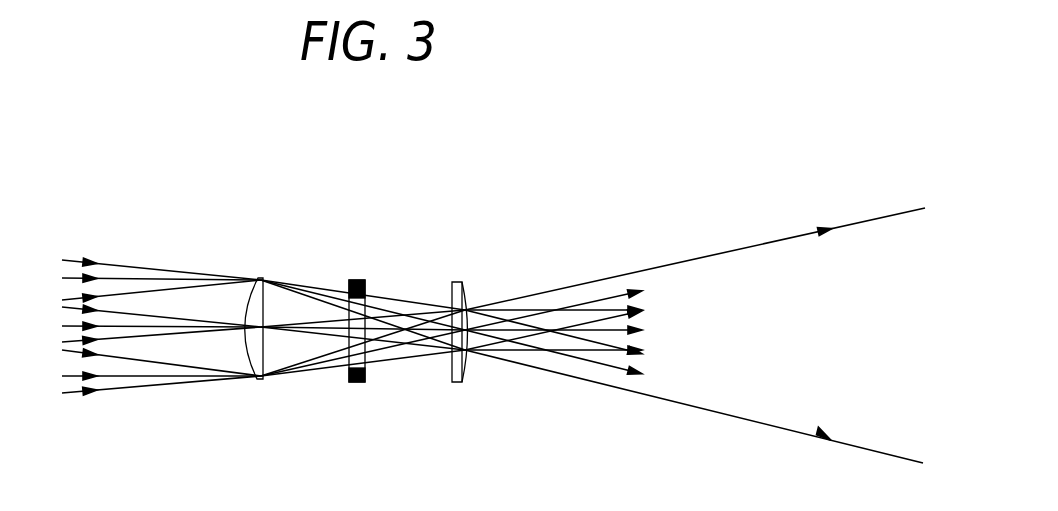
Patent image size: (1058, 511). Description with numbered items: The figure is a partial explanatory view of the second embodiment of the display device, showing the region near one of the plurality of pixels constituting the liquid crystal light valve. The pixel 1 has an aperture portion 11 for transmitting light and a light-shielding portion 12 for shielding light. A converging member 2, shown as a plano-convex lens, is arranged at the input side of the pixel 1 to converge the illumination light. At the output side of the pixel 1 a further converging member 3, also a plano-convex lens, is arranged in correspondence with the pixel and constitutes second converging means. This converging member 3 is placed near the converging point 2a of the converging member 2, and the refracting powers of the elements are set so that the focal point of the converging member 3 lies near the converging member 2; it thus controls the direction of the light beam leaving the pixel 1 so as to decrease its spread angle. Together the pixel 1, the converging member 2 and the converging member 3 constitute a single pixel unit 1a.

The pixel unit 1a is at (513, 168).
The pixel 1 is at (422, 229).
The aperture portion 11 is at (350, 312).
The light-shielding portion 12 is at (356, 281).
The converging member 2 is at (260, 280).
The converging point 2a is at (470, 333).
The converging member 3 is at (457, 282).